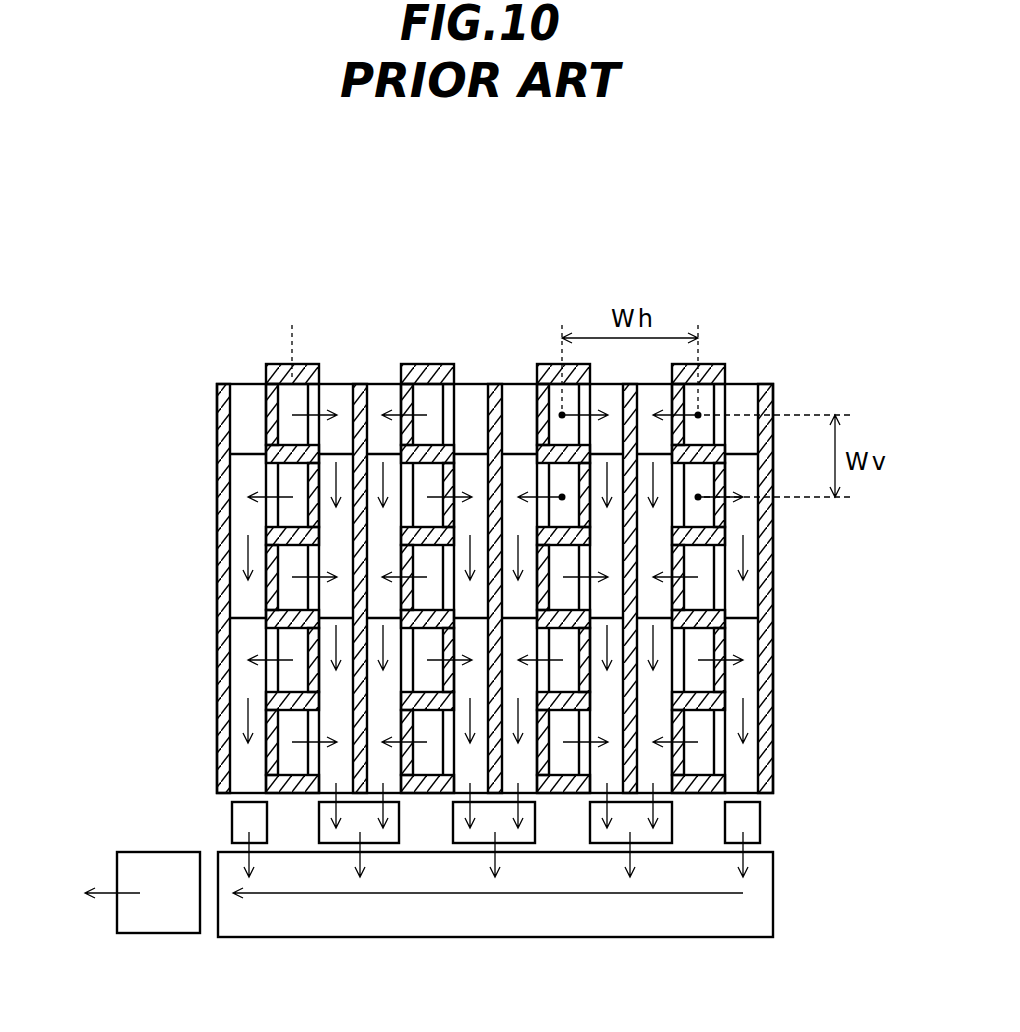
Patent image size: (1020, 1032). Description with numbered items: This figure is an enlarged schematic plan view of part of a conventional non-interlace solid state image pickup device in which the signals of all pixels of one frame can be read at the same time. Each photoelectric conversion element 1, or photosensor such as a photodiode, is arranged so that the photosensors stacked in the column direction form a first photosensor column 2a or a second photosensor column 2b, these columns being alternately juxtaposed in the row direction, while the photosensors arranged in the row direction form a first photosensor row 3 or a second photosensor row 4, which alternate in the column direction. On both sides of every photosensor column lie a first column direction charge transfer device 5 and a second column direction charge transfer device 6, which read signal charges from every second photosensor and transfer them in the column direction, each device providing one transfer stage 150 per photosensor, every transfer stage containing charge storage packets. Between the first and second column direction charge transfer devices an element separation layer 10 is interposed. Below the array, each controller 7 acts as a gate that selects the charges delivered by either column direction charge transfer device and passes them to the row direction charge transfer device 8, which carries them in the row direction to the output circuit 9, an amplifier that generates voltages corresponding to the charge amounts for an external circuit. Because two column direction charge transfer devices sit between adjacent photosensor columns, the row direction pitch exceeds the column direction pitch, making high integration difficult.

The photoelectric conversion element 1 is at (287, 393).
The first photosensor column 2a is at (427, 331).
The second photosensor column 2b is at (563, 331).
The first photosensor row 3 is at (198, 366).
The second photosensor row 4 is at (198, 466).
The first column direction charge transfer device 5 is at (340, 393).
The second column direction charge transfer device 6 is at (245, 393).
The controller 7 is at (480, 833).
The row direction charge transfer device 8 is at (768, 910).
The output circuit 9 is at (153, 920).
The element separation layer 10 is at (352, 752).
The transfer stage 150 is at (782, 785).